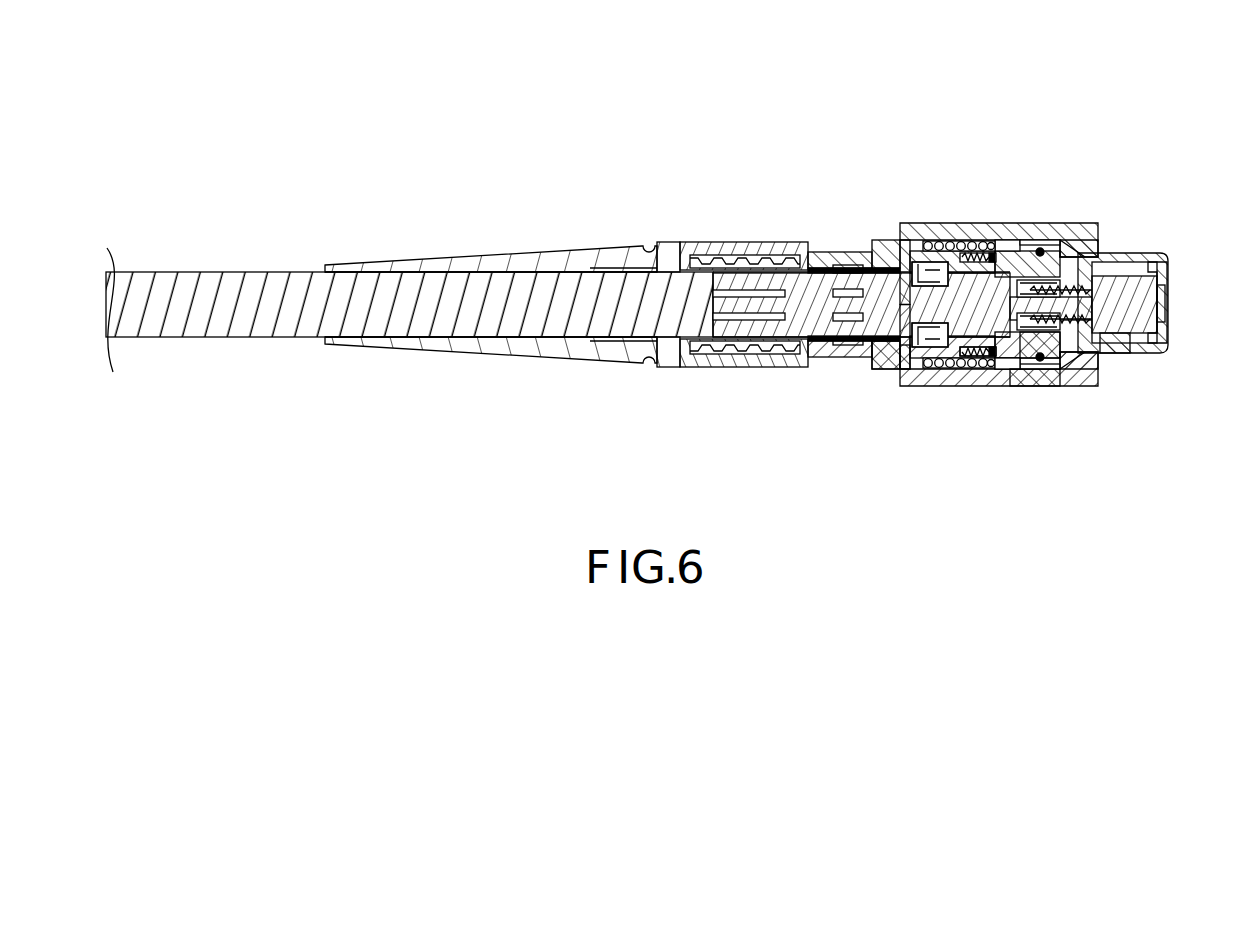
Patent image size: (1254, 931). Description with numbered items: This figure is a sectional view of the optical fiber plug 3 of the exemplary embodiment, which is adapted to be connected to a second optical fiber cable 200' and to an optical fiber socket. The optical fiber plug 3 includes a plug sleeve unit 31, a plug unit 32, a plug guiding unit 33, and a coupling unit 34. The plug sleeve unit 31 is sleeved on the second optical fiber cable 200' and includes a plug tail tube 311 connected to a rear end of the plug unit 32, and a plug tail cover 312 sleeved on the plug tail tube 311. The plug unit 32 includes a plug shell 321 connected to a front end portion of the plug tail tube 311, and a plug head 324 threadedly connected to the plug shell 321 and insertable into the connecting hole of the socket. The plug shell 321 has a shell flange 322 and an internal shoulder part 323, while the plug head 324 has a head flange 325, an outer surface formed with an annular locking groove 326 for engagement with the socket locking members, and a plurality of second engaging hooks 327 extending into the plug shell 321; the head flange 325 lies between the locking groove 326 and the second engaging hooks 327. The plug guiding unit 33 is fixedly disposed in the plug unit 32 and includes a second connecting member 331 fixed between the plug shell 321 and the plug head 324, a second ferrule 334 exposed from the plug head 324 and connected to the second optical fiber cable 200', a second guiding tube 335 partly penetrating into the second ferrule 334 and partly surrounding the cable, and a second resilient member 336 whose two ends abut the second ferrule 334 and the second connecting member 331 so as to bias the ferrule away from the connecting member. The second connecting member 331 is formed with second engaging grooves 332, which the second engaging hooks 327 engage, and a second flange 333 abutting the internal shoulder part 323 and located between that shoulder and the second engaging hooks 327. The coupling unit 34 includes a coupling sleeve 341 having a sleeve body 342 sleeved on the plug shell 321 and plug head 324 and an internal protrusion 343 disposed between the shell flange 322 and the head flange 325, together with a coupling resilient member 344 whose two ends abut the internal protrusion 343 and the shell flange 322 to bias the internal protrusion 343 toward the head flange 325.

The optical fiber plug 3 is at (658, 152).
The second optical fiber cable 200' is at (599, 277).
The plug sleeve unit 31 is at (482, 384).
The plug tail tube 311 is at (694, 363).
The plug tail cover 312 is at (455, 250).
The plug unit 32 is at (833, 372).
The plug shell 321 is at (833, 238).
The shell flange 322 is at (886, 248).
The internal shoulder part 323 is at (913, 245).
The plug head 324 is at (1137, 240).
The head flange 325 is at (1045, 230).
The annular locking groove 326 is at (1078, 255).
The second engaging hooks 327 is at (937, 250).
The plug guiding unit 33 is at (1176, 315).
The second connecting member 331 is at (880, 360).
The second engaging grooves 332 is at (980, 366).
The second flange 333 is at (913, 386).
The second ferrule 334 is at (1152, 266).
The second guiding tube 335 is at (1116, 336).
The second resilient member 336 is at (1068, 352).
The coupling unit 34 is at (970, 190).
The coupling sleeve 341 is at (993, 210).
The sleeve body 342 is at (1040, 386).
The internal protrusion 343 is at (1010, 247).
The coupling resilient member 344 is at (963, 367).